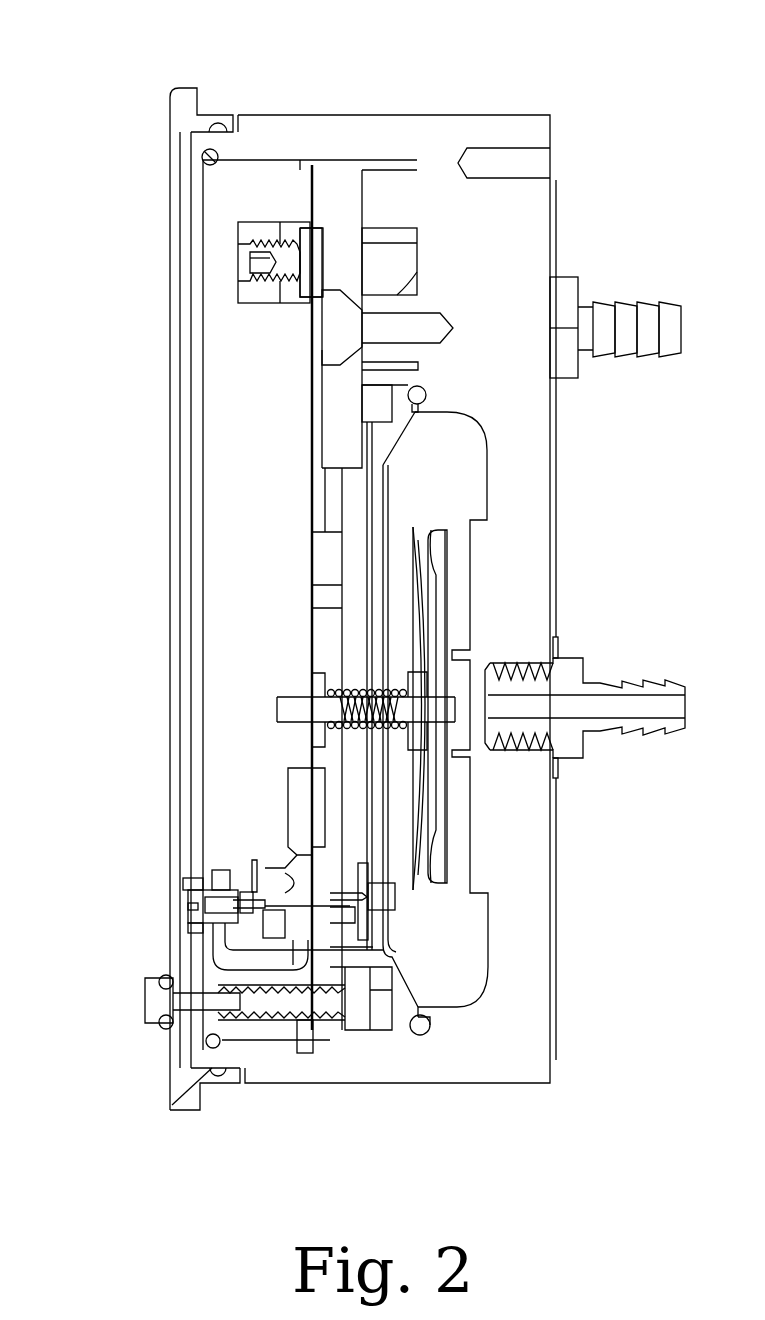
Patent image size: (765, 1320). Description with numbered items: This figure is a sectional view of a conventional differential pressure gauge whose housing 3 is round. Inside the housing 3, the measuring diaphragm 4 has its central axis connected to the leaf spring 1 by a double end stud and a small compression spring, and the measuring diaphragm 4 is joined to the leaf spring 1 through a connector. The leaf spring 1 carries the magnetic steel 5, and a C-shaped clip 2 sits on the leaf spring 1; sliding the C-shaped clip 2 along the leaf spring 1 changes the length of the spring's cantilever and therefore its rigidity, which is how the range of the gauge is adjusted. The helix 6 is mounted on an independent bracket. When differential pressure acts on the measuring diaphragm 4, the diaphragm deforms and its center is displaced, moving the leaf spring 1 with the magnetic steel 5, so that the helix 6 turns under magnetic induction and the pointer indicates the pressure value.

The leaf spring 1 is at (310, 597).
The C-shaped clip 2 is at (242, 235).
The housing 3 is at (713, 50).
The measuring diaphragm 4 is at (720, 508).
The magnetic steel 5 is at (305, 818).
The helix 6 is at (295, 905).